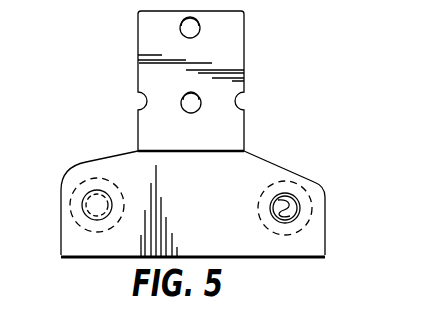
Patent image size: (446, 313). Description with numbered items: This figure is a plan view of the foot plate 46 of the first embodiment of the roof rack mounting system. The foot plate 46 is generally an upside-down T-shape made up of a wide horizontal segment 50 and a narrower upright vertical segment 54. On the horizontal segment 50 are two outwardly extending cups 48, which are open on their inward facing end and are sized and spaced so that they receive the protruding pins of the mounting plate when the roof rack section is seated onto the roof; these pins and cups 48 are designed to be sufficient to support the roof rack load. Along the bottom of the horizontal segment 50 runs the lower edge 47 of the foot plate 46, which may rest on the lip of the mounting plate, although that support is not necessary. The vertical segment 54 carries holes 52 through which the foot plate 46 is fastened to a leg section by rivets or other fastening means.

The foot plate 46 is at (168, 147).
The lower edge 47 is at (297, 258).
The cups 48 is at (293, 200).
The horizontal segment 50 is at (73, 247).
The holes 52 is at (182, 108).
The vertical segment 54 is at (190, 81).